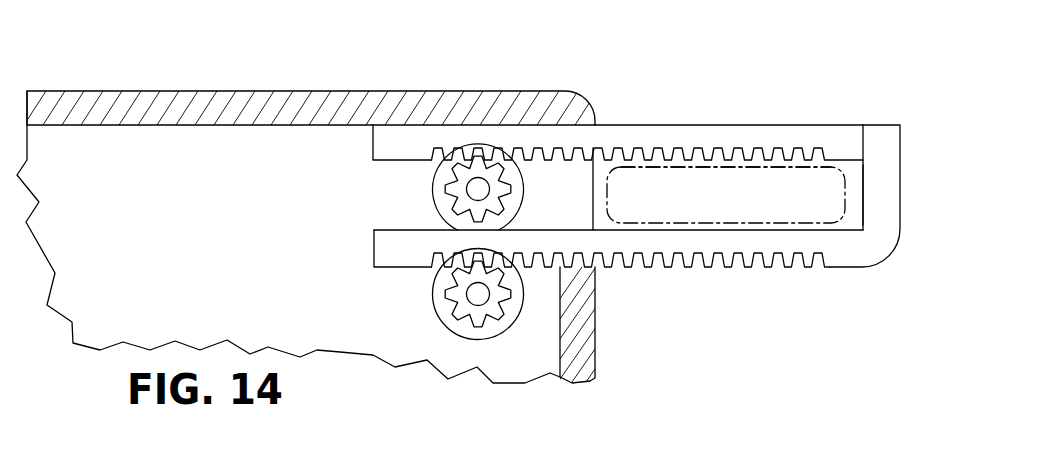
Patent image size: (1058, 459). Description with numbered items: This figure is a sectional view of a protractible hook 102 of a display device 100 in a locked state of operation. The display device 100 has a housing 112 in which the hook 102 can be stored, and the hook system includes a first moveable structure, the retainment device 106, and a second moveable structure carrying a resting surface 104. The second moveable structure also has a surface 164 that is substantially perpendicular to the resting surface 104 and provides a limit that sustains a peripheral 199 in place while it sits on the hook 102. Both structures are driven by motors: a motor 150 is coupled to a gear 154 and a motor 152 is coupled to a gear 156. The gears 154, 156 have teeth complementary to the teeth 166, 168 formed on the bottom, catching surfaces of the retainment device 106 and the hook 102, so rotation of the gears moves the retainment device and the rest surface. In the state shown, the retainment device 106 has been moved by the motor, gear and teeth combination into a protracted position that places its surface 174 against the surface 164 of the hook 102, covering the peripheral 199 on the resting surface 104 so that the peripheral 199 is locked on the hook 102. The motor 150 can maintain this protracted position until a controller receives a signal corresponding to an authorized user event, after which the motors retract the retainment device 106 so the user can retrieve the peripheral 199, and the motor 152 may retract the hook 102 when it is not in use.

The display device 100 is at (241, 80).
The protractible hook 102 is at (853, 269).
The resting surface 104 is at (731, 224).
The retainment device 106 is at (373, 142).
The housing 112 is at (350, 91).
The motor 150 is at (432, 184).
The motor 152 is at (432, 291).
The gear 154 is at (456, 224).
The gear 156 is at (446, 327).
The surface 164 is at (863, 191).
The teeth 166 is at (553, 162).
The teeth 168 is at (708, 268).
The surface 174 is at (863, 144).
The peripheral 199 is at (632, 167).